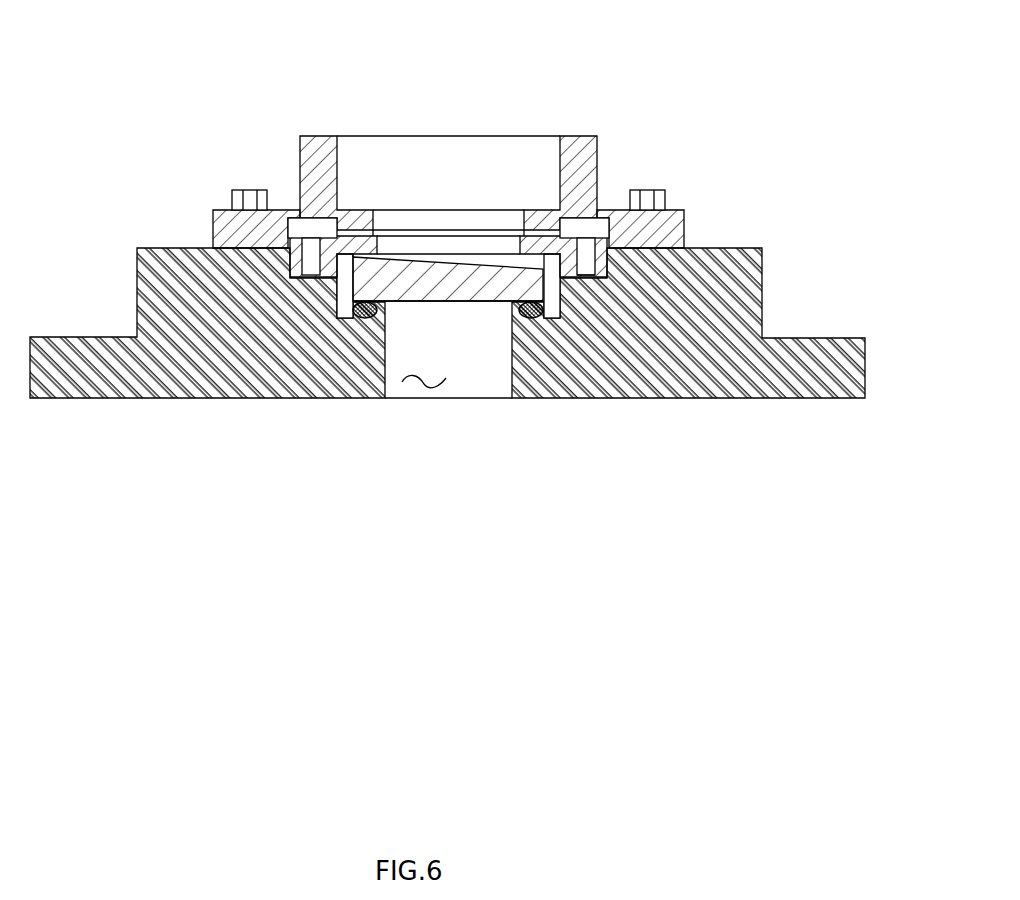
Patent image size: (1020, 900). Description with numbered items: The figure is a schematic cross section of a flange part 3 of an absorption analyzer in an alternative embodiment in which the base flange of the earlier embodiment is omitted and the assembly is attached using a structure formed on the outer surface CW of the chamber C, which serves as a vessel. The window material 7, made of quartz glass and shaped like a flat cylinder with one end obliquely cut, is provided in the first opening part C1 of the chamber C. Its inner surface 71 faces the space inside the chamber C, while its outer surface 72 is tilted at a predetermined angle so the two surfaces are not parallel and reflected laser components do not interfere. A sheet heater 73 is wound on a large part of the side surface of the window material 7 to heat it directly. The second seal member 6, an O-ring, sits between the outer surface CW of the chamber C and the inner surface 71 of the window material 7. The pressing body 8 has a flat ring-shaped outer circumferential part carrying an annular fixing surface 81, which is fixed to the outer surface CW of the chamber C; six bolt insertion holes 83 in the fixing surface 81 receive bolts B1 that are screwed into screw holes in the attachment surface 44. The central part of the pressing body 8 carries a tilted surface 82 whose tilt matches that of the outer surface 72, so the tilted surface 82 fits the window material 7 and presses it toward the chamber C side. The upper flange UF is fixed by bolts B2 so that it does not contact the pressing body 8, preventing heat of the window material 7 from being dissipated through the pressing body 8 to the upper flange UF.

The flange part 3 is at (640, 77).
The upper flange UF is at (326, 135).
The bolts B1 is at (318, 216).
The bolts B2 is at (448, 164).
The bolt insertion holes 83 is at (310, 256).
The attachment surface 44 is at (448, 188).
The window material 7 is at (420, 251).
The outer surface 72 is at (452, 262).
The pressing body 8 is at (518, 226).
The sheet heater 73 is at (322, 274).
The outer surface of the chamber CW is at (560, 300).
The chamber C is at (838, 320).
The second seal member 6 is at (364, 318).
The inner surface 71 is at (413, 302).
The first opening part C1 is at (422, 396).
The tilted surface 82 is at (513, 303).
The fixing surface 81 is at (594, 278).